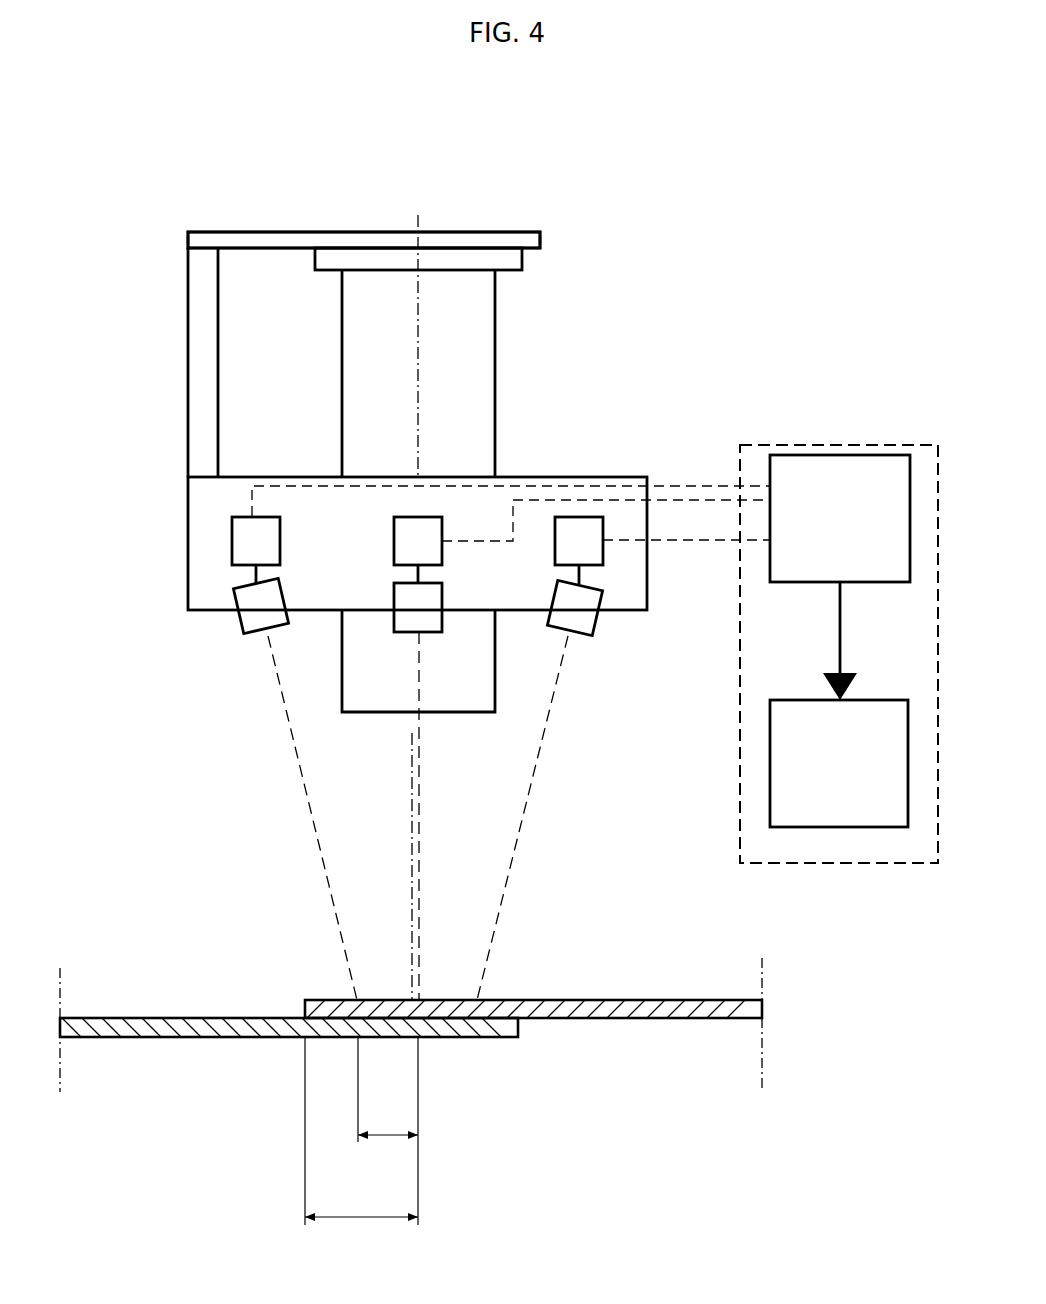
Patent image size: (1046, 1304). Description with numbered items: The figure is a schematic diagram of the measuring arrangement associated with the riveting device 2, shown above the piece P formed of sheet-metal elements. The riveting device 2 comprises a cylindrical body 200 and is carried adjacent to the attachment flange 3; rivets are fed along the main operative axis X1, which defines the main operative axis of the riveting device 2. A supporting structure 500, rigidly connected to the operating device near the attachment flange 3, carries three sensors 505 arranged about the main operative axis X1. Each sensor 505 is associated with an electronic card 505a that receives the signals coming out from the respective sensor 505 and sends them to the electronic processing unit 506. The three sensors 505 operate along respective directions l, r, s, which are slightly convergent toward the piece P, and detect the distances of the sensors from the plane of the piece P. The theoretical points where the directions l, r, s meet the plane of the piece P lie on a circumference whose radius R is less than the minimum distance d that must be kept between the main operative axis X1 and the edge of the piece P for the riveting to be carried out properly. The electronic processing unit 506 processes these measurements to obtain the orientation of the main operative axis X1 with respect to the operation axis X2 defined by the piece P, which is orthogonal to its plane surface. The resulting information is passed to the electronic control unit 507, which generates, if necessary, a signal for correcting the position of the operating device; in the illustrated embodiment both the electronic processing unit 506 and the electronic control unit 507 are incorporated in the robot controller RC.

The riveting device 2 is at (508, 338).
The attachment flange 3 is at (505, 237).
The cylindrical body 200 is at (478, 400).
The supporting structure 500 is at (198, 552).
The sensor 505 is at (250, 617).
The electronic card 505a is at (412, 548).
The electronic processing unit 506 is at (846, 460).
The electronic control unit 507 is at (793, 715).
The robot controller RC is at (860, 847).
The piece P is at (282, 984).
The main operative axis X1 is at (416, 330).
The operation axis X2 is at (410, 835).
The operating direction l is at (306, 815).
The operating direction r is at (420, 740).
The operating direction s is at (530, 800).
The radius R is at (388, 1119).
The minimum distance d is at (361, 1200).